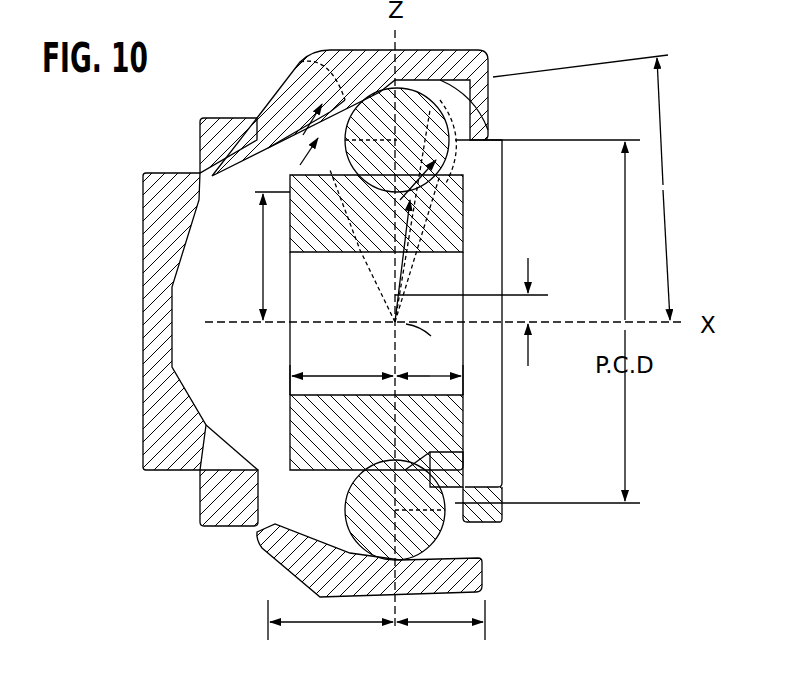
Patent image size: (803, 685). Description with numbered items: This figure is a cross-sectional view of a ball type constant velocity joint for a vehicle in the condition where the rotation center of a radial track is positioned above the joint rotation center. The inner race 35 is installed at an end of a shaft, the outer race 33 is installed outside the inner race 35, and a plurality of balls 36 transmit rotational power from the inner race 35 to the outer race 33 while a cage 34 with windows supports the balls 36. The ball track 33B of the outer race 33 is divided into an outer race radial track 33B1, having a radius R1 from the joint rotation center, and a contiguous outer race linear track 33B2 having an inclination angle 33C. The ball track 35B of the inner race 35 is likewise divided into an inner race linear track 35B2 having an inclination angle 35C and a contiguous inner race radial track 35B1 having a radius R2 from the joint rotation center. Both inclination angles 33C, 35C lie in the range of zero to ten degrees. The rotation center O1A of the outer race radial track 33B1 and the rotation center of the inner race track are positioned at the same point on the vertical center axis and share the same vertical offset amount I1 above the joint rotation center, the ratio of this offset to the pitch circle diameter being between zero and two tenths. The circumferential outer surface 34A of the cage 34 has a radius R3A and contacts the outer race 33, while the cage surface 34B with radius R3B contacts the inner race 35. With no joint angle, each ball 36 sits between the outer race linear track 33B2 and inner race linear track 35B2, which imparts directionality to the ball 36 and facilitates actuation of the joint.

The outer race 33 is at (158, 226).
The ball track of the outer race 33B is at (483, 557).
The outer race radial track 33B1 is at (320, 650).
The outer race linear track 33B2 is at (430, 650).
The inclination angle of the outer race linear track 33C is at (665, 178).
The cage 34 is at (206, 528).
The circumferential outer surface of the cage 34A is at (487, 513).
The circumferential inner surface of the cage 34B is at (462, 482).
The inner race 35 is at (143, 470).
The ball track of the inner race 35B is at (462, 446).
The inner race radial track 35B1 is at (433, 371).
The inner race linear track 35B2 is at (341, 371).
The inclination angle of the inner race linear track 35C is at (248, 256).
The ball 36 is at (426, 58).
The radius of the outer race radial track R1 is at (303, 170).
The radius of the inner race radial track R2 is at (445, 268).
The radius of the cage circumferential outer surface R3A is at (372, 262).
The radius of the cage circumferential inner surface R3B is at (468, 195).
The vertical offset amount I1 is at (471, 312).
The rotation center of the outer race radial track O1A is at (394, 318).